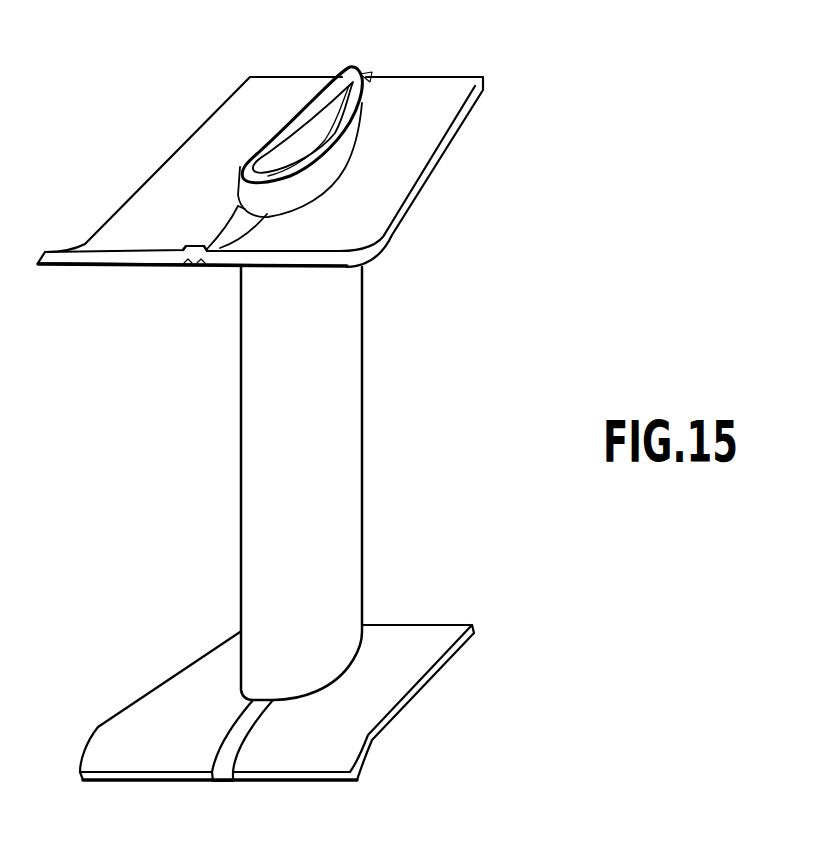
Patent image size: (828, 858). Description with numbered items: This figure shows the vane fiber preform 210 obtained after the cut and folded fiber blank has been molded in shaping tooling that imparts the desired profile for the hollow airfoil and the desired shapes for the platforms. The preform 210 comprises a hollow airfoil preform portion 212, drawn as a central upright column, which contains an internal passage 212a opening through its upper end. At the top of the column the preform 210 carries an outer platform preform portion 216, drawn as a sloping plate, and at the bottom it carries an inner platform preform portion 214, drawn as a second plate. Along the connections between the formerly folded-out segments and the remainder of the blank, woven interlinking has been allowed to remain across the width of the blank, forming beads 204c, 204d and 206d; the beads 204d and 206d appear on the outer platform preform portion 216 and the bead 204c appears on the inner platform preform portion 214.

The preform 210 is at (220, 478).
The hollow airfoil preform portion 212 is at (325, 467).
The internal passage 212a is at (287, 168).
The inner platform preform portion 214 is at (216, 670).
The outer platform preform portion 216 is at (193, 160).
The bead 204c is at (223, 785).
The bead 204d is at (183, 272).
The bead 206d is at (368, 72).